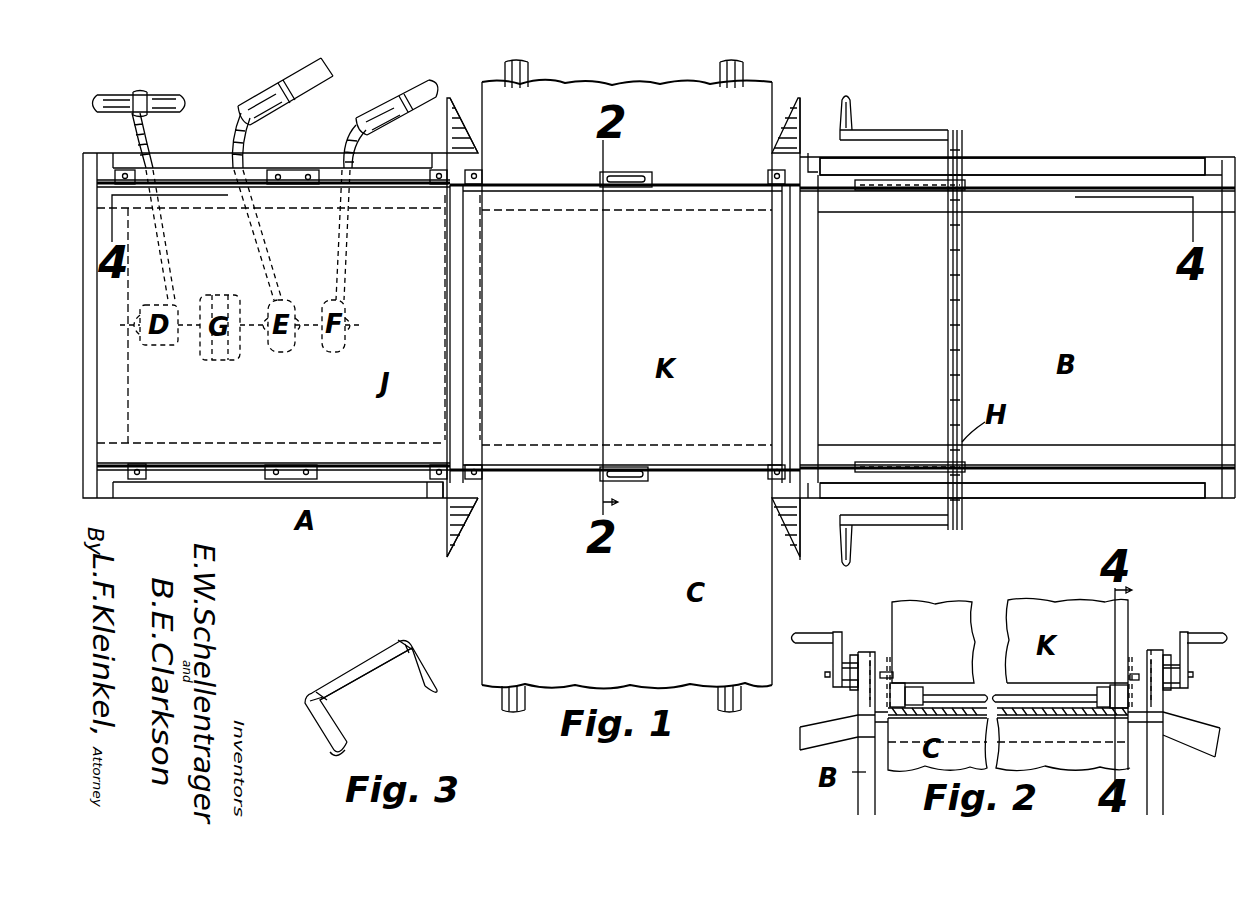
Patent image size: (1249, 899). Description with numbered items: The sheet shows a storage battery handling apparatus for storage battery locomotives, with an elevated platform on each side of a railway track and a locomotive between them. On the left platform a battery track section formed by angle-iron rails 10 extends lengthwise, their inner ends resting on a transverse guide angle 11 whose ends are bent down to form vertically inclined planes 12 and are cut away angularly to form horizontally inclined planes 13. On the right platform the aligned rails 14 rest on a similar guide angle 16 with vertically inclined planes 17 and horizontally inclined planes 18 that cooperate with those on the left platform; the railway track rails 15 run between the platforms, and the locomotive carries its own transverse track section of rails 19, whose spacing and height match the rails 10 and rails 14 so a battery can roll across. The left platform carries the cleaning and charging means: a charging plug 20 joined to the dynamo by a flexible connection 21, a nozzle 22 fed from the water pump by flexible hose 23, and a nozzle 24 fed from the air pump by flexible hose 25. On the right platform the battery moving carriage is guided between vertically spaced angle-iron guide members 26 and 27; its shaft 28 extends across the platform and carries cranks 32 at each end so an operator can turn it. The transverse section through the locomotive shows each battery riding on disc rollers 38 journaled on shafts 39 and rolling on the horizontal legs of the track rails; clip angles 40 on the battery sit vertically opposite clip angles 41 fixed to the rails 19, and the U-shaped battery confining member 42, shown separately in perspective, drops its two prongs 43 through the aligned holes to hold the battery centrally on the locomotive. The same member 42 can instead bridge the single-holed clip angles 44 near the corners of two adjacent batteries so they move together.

In FIG. 1, the rails 10 is at (400, 209).
In FIG. 1, the guide angle 11 is at (432, 508).
In FIG. 1, the vertically inclined planes 12 is at (446, 122).
In FIG. 1, the horizontally inclined planes 13 is at (474, 118).
In FIG. 1, the rails 14 is at (1088, 212).
In FIG. 1, the railway track rails 15 is at (717, 697).
In FIG. 1, the guide angle 16 is at (768, 486).
In FIG. 2, the guide angle 16 is at (880, 720).
In FIG. 1, the vertically inclined planes 17 is at (800, 125).
In FIG. 2, the vertically inclined planes 17 is at (858, 700).
In FIG. 1, the horizontally inclined planes 18 is at (778, 125).
In FIG. 2, the horizontally inclined planes 18 is at (845, 722).
In FIG. 1, the rails 19 is at (700, 210).
In FIG. 2, the rails 19 is at (885, 705).
In FIG. 1, the charging plug 20 is at (178, 102).
In FIG. 1, the flexible connection 21 is at (140, 125).
In FIG. 1, the nozzle 22 is at (300, 85).
In FIG. 1, the flexible hose 23 is at (240, 128).
In FIG. 1, the nozzle 24 is at (412, 94).
In FIG. 1, the flexible hose 25 is at (362, 133).
In FIG. 1, the guide member 26 is at (1083, 148).
In FIG. 2, the guide member 26 is at (870, 660).
In FIG. 2, the guide member 27 is at (855, 665).
In FIG. 1, the shaft 28 is at (958, 132).
In FIG. 2, the shaft 28 is at (833, 665).
In FIG. 1, the cranks 32 is at (888, 130).
In FIG. 2, the cranks 32 is at (836, 634).
In FIG. 2, the disc rollers 38 is at (912, 718).
In FIG. 2, the shafts 39 is at (1042, 695).
In FIG. 1, the clip angles 40 is at (296, 186).
In FIG. 2, the clip angles 40 is at (890, 682).
In FIG. 2, the clip angles 41 is at (900, 706).
In FIG. 1, the battery confining member 42 is at (628, 178).
In FIG. 2, the battery confining member 42 is at (888, 657).
In FIG. 3, the battery confining member 42 is at (360, 682).
In FIG. 3, the prongs 43 is at (410, 690).
In FIG. 1, the clip angles 44 is at (140, 176).